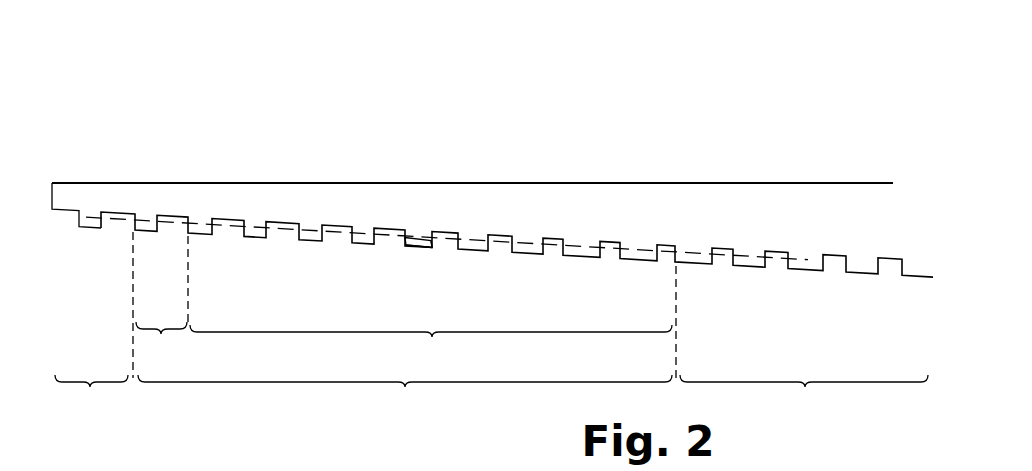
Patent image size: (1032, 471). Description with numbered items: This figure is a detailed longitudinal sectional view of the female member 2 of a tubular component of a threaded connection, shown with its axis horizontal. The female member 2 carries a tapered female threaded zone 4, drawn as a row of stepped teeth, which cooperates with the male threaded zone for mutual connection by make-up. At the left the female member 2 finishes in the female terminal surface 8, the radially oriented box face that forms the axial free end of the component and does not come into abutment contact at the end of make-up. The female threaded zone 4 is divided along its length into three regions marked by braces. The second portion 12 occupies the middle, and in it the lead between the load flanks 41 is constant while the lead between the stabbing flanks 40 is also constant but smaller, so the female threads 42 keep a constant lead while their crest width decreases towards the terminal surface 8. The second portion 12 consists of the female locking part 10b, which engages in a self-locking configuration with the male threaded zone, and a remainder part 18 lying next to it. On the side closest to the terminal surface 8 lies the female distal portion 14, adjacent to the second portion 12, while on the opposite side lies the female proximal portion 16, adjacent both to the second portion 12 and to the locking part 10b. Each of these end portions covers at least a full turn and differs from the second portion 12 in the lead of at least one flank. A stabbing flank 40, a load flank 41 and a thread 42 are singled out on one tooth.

The female member 2 is at (408, 153).
The female threaded zone 4 is at (555, 262).
The female terminal surface 8 is at (52, 189).
The female locking part 10b is at (431, 346).
The second portion 12 is at (407, 342).
The female distal portion 14 is at (91, 398).
The female proximal portion 16 is at (804, 397).
The remainder part 18 is at (160, 305).
The stabbing flanks 40 is at (405, 240).
The load flanks 41 is at (433, 243).
The female threads 42 is at (421, 247).